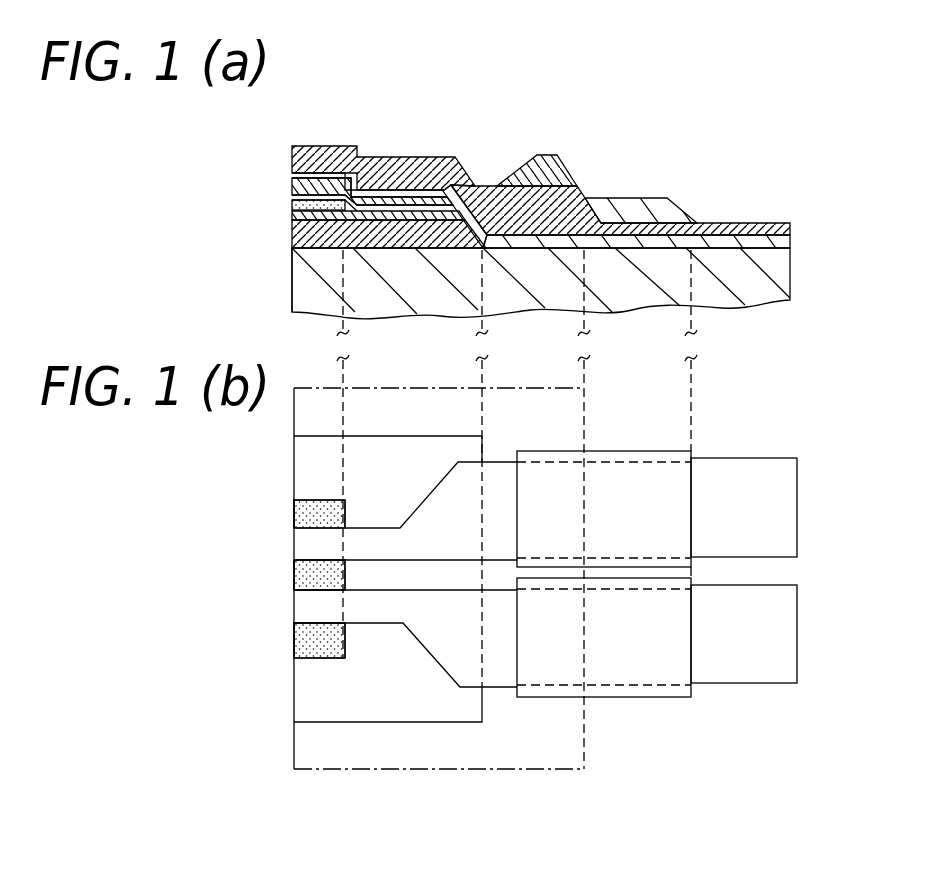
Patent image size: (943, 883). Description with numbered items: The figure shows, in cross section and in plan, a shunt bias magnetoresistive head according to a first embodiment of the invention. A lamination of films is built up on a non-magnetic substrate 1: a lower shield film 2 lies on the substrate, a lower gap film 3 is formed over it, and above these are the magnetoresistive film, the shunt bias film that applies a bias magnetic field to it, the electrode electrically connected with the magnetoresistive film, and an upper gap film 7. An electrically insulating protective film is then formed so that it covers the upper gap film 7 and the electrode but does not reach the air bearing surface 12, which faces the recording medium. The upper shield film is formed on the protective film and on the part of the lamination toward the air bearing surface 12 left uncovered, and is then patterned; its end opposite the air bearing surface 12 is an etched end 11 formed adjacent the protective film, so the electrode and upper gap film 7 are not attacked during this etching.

The non-magnetic substrate 1 is at (783, 277).
The air bearing surface 12 is at (292, 288).
The lower shield film 2 is at (292, 232).
The lower gap film 3 is at (787, 240).
The upper gap film 7 is at (292, 176).
The etched end 11 is at (577, 184).